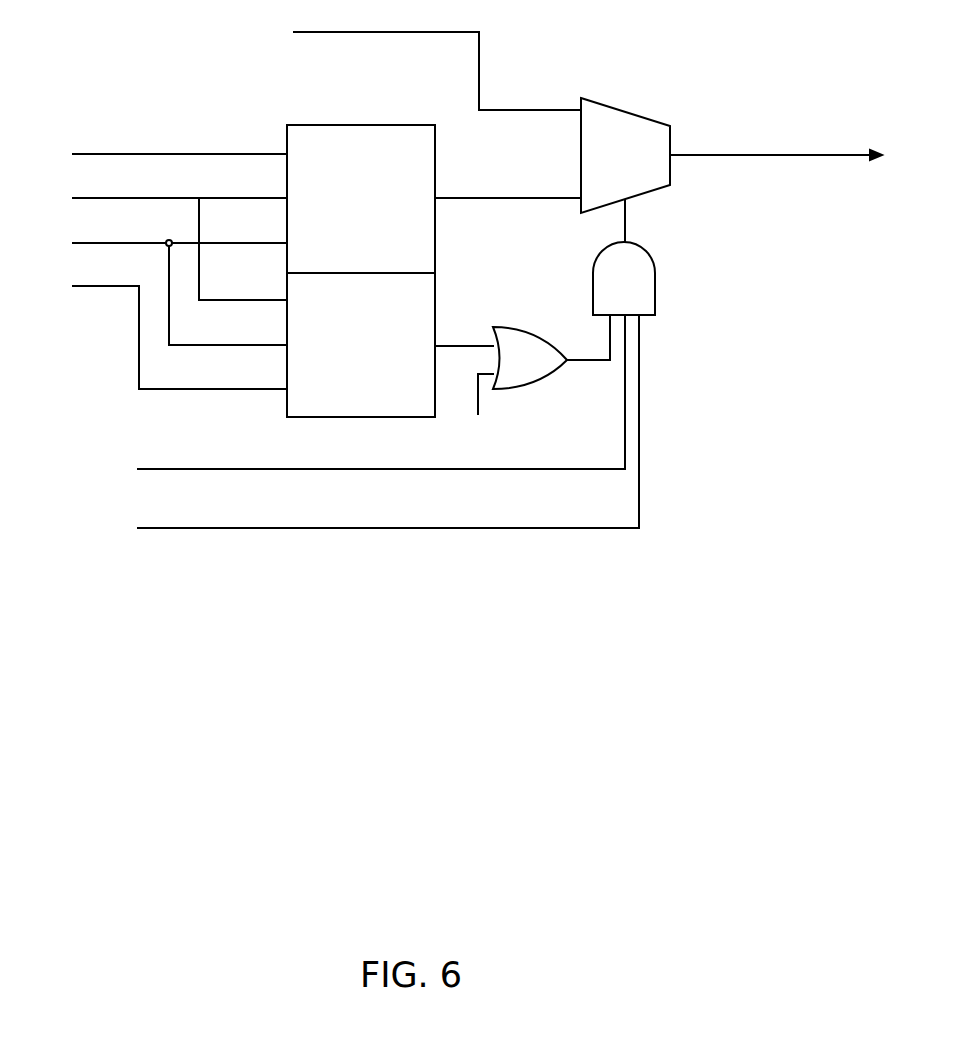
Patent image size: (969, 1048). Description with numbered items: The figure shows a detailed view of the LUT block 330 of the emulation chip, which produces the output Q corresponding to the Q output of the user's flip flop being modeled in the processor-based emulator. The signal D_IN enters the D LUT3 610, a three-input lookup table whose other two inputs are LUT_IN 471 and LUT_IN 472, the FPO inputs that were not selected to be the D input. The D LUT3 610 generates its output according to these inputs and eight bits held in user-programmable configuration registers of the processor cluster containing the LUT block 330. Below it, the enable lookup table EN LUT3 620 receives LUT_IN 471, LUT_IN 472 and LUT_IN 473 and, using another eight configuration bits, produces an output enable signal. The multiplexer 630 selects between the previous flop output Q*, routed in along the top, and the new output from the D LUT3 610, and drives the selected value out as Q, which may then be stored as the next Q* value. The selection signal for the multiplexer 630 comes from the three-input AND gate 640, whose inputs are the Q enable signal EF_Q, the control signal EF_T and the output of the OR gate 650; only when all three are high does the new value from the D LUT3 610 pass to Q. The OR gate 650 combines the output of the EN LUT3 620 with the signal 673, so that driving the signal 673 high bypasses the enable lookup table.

The LUT block 330 is at (457, 267).
The LUT_IN 471 is at (160, 236).
The LUT_IN 472 is at (160, 280).
The LUT_IN 473 is at (160, 324).
The D LUT3 610 is at (434, 199).
The EN LUT3 620 is at (390, 345).
The multiplexer 630 is at (731, 155).
The three-input AND gate 640 is at (624, 257).
The OR gate 650 is at (551, 352).
The signal 673 is at (477, 407).